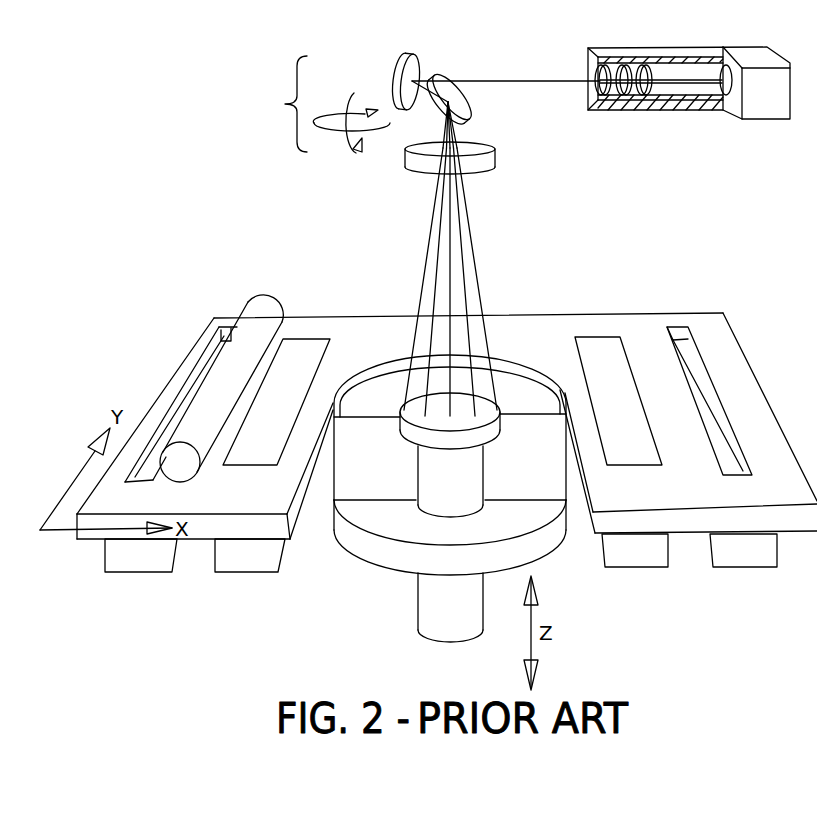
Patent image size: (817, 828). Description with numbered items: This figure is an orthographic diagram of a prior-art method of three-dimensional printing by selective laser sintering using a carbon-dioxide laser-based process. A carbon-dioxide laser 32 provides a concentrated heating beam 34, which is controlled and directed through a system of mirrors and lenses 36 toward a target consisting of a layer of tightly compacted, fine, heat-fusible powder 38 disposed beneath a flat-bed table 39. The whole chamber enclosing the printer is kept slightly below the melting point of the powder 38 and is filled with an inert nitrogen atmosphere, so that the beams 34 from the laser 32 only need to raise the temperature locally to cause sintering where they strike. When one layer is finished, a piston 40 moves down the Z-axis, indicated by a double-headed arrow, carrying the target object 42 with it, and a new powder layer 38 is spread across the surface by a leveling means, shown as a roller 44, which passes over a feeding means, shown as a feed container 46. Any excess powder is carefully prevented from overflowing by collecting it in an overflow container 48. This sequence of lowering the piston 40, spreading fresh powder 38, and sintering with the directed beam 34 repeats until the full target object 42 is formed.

The laser 32 is at (705, 144).
The heating beam 34 is at (477, 264).
The system of mirrors and lenses 36 is at (431, 102).
The powder layer 38 is at (378, 387).
The flat-bed table 39 is at (650, 286).
The piston 40 is at (366, 561).
The target object 42 is at (418, 468).
The roller 44 is at (270, 302).
The feed container 46 is at (241, 572).
The overflow container 48 is at (131, 572).